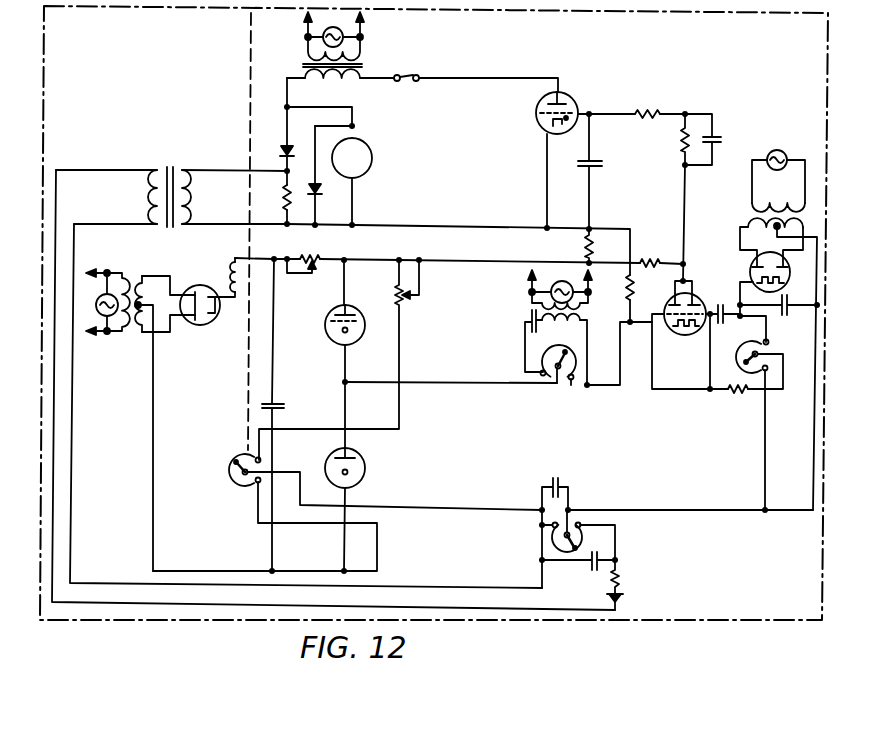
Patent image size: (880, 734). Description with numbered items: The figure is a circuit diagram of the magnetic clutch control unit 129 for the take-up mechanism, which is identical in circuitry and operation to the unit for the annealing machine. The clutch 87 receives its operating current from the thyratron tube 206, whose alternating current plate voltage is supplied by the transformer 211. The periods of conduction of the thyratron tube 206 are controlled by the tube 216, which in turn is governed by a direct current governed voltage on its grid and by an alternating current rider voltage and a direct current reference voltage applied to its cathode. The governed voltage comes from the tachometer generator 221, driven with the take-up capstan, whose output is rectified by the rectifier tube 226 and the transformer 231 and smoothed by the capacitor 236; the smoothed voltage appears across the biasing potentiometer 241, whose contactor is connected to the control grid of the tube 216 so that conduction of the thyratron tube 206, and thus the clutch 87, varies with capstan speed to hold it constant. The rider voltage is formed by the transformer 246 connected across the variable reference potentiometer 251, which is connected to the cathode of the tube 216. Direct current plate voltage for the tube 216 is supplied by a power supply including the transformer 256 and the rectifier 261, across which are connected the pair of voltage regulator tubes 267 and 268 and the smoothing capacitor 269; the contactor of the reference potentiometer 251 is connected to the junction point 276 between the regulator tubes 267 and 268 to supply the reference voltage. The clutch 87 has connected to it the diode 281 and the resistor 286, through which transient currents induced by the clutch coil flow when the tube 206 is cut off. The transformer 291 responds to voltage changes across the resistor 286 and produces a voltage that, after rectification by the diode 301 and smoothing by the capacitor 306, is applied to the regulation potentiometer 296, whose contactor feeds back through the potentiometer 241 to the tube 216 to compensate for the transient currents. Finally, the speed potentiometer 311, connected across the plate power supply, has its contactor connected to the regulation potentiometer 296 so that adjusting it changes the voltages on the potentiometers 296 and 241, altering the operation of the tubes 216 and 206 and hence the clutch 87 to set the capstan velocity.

The magnetic clutch control unit 129 is at (571, 631).
The transformer 211 is at (372, 63).
The clutch 87 is at (372, 161).
The thyratron tube 206 is at (575, 98).
The tachometer generator 221 is at (776, 150).
The transformer 231 is at (742, 211).
The transformer 291 is at (164, 160).
The diode 281 is at (284, 149).
The resistor 286 is at (283, 195).
The transformer 256 is at (132, 340).
The rectifier 261 is at (203, 326).
The voltage regulator tube 267 is at (328, 336).
The capacitor 269 is at (270, 410).
The junction point 276 is at (350, 381).
The transformer 246 is at (534, 313).
The reference potentiometer 251 is at (541, 362).
The tube 216 is at (683, 336).
The rectifier tube 226 is at (750, 268).
The capacitor 236 is at (740, 292).
The biasing potentiometer 241 is at (740, 360).
The speed potentiometer 311 is at (232, 481).
The voltage regulator tube 268 is at (362, 471).
The regulation potentiometer 296 is at (584, 536).
The capacitor 306 is at (600, 555).
The diode 301 is at (625, 598).